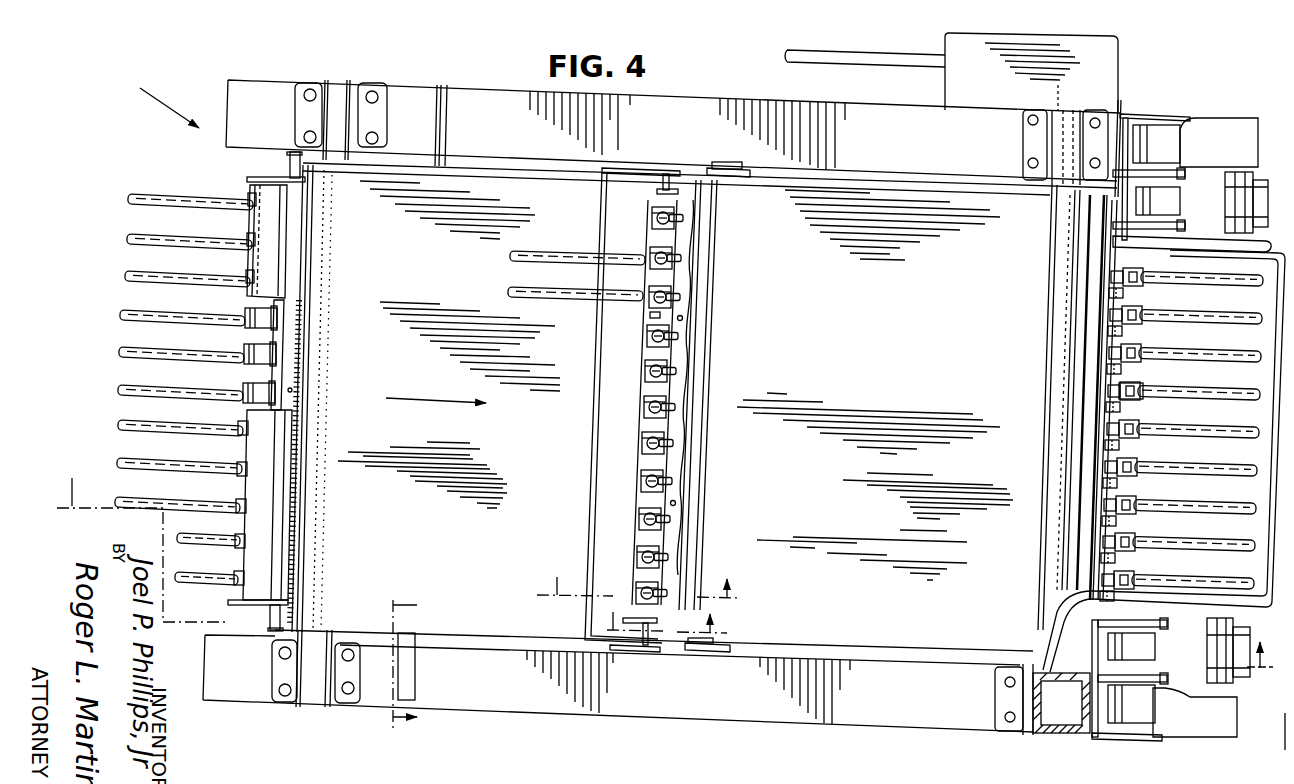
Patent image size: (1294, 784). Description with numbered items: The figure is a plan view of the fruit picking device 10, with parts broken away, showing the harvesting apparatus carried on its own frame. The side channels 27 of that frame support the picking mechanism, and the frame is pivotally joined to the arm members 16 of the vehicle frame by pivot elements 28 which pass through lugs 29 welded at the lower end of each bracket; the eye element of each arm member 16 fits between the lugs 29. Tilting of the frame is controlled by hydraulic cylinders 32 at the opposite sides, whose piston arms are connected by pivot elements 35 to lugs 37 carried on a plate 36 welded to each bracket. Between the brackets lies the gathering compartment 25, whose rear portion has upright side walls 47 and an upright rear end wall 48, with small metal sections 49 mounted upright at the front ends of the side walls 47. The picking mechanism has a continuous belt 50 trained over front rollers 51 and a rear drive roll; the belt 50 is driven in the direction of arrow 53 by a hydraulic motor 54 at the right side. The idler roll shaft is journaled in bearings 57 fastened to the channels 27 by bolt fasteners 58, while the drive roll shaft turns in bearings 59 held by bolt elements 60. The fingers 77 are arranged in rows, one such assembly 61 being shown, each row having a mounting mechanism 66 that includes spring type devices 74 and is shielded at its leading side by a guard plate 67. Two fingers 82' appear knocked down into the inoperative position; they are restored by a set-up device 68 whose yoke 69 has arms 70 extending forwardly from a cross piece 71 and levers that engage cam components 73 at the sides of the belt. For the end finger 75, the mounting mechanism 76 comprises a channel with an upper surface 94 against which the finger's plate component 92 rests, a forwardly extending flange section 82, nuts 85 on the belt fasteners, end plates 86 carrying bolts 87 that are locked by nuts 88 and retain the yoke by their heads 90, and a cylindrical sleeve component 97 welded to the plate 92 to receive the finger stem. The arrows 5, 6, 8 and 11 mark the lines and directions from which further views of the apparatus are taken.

The test fixture assembly 10 is at (155, 96).
The arm member 16 is at (1241, 117).
The gathering compartment 25 is at (1161, 407).
The elongated channel 27 is at (703, 100).
The pivot element 28 is at (1160, 144).
The lug 29 is at (1176, 114).
The hydraulic cylinder 32 is at (1262, 174).
The pivot element 35 is at (1165, 203).
The plate 36 is at (1121, 128).
The lug 37 is at (1184, 174).
The side wall 47 is at (1136, 454).
The rear end wall 48 is at (1275, 452).
The metal section 49 is at (1050, 626).
The continuous belt 50 is at (517, 190).
The front roller 51 is at (520, 398).
The arrow 53 is at (432, 397).
The hydraulic motor 54 is at (948, 75).
The bearing 57 is at (362, 84).
The bolt type fastener 58 is at (303, 135).
The bearing 59 is at (1029, 432).
The bolt element 60 is at (1027, 163).
The finger assembly 61 is at (674, 391).
The mounting mechanism 66 is at (685, 398).
The guard plate 67 is at (257, 223).
The set-up device 68 is at (820, 407).
The yoke 69 is at (587, 450).
The yoke arm 70 is at (672, 409).
The yoke cross piece 71 is at (586, 535).
The cam component 73 is at (446, 100).
The spring type device 74 is at (1110, 333).
The end finger 75 is at (660, 592).
The mounting mechanism 76 is at (516, 402).
The finger 77 is at (674, 420).
The flange section 82 is at (520, 402).
The collapsed finger 82' is at (575, 278).
The nut 85 is at (291, 390).
The plate 86 is at (250, 178).
The bolt 87 is at (289, 162).
The nut 88 is at (679, 191).
The bolt head 90 is at (736, 168).
The plate component 92 is at (669, 256).
The upper surface 94 is at (651, 316).
The sleeve component 97 is at (256, 383).
The section line 5- 5 is at (665, 560).
The section line 6- 6 is at (660, 622).
The section line 8- 8 is at (639, 585).
The section line 11- 11 is at (403, 666).